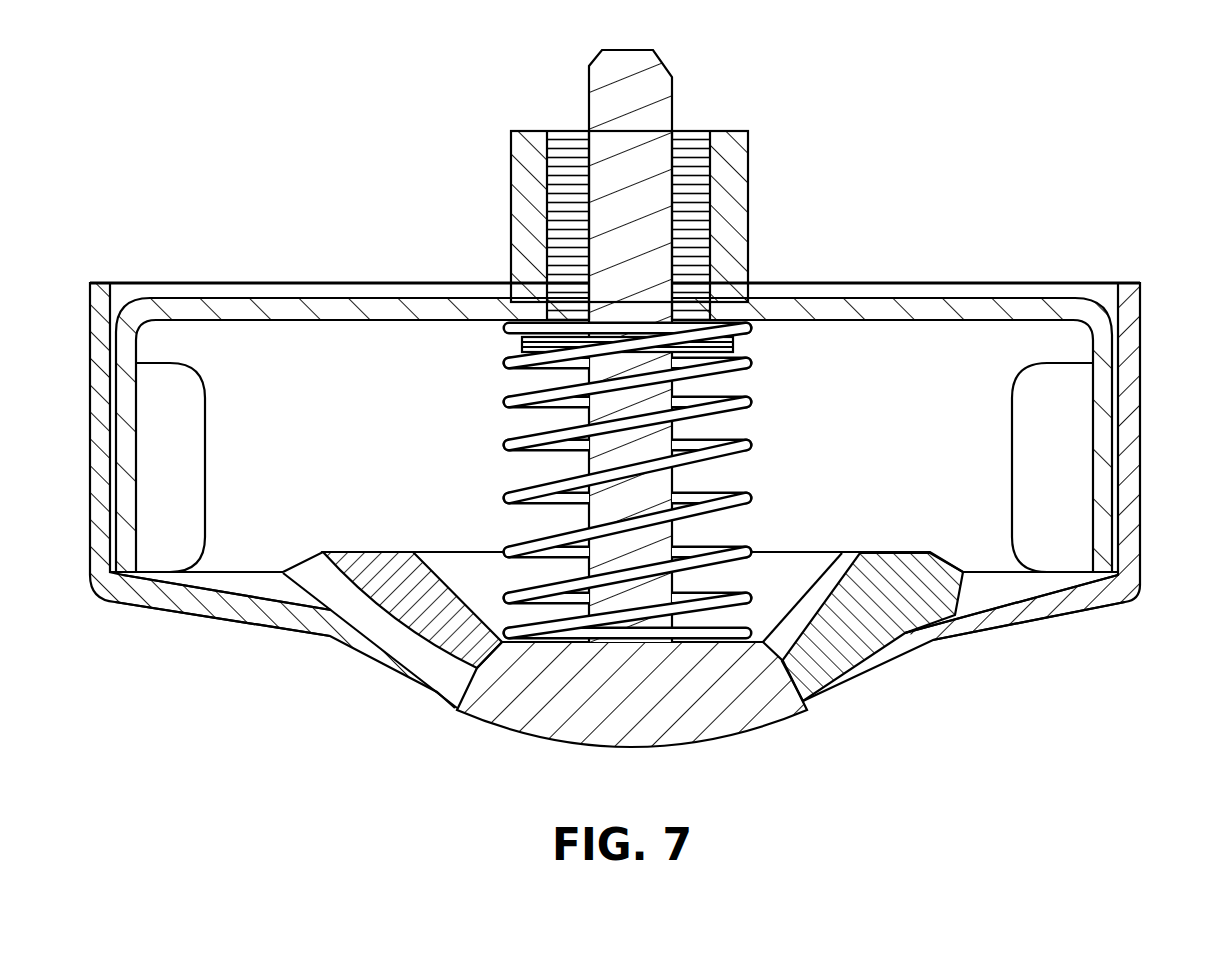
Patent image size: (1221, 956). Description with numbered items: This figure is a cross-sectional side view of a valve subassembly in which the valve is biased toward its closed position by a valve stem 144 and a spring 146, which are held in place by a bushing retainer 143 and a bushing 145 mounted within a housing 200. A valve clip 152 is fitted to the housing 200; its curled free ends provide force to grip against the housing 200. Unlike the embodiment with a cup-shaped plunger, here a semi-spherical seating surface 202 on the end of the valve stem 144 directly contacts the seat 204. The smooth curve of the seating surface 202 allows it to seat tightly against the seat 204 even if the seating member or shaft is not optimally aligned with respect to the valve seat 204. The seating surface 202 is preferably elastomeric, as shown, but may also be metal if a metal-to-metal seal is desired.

The bushing retainer 143 is at (735, 186).
The valve stem 144 is at (614, 77).
The bushing 145 is at (694, 135).
The spring 146 is at (750, 403).
The valve clip 152 is at (853, 307).
The housing 200 is at (1145, 335).
The semi-spherical seating surface 202 is at (407, 670).
The seat 204 is at (322, 622).